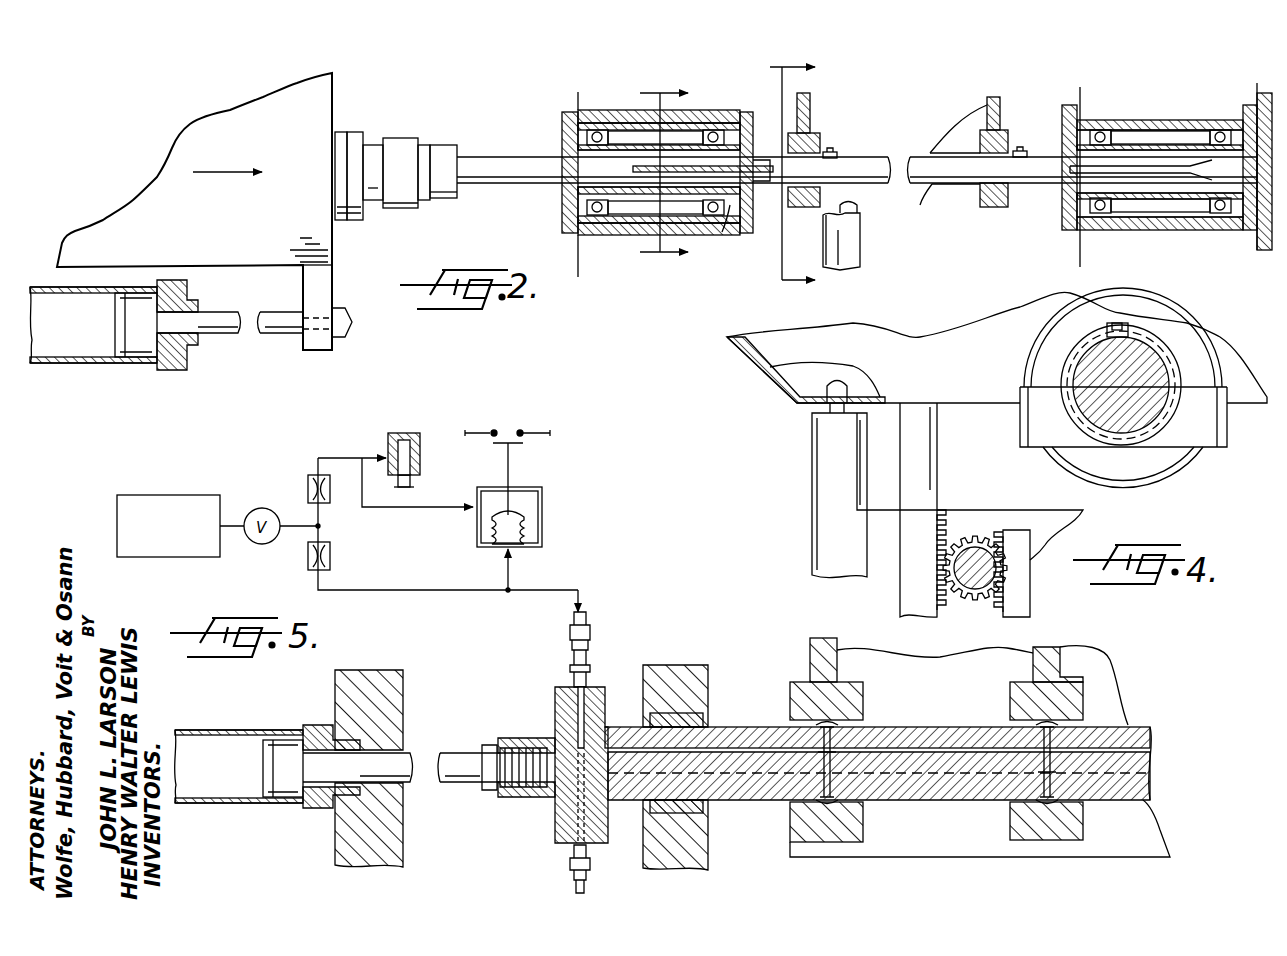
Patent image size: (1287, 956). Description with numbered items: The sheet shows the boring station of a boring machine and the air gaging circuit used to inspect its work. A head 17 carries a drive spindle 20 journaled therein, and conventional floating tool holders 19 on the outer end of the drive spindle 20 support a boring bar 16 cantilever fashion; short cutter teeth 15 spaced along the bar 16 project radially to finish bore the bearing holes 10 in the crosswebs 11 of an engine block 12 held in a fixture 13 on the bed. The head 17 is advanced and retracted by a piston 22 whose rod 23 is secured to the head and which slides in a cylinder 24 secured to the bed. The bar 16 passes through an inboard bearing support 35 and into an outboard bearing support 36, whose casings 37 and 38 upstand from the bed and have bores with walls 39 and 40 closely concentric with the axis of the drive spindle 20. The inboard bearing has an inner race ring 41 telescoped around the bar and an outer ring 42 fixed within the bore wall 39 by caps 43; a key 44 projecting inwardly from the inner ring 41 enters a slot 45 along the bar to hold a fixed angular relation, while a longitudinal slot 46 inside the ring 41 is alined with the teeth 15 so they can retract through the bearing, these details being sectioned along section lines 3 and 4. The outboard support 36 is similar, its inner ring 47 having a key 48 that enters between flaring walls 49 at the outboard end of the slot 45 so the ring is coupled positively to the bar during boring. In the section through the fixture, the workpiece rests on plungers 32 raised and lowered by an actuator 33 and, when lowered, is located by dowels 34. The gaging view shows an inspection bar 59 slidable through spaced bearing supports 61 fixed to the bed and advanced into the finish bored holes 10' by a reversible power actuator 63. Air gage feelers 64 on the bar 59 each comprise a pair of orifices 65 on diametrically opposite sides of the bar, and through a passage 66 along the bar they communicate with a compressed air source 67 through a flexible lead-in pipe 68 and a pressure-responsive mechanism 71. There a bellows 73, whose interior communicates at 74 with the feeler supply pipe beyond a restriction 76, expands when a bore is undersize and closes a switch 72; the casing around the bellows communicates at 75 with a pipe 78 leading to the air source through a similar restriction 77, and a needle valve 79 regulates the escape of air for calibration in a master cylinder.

In FIG. 2, the section line 3— 3 is at (656, 173).
In FIG. 2, the section line 4— 4 is at (782, 174).
In FIG. 2, the bearing holes 10 is at (898, 169).
In FIG. 4, the bearing holes 10 is at (1141, 369).
In FIG. 5, the finish bored holes 10' is at (988, 741).
In FIG. 2, the crosswebs 11 is at (808, 125).
In FIG. 4, the crosswebs 11 is at (1060, 465).
In FIG. 5, the crosswebs 11 is at (848, 857).
In FIG. 2, the engine block 12 is at (973, 97).
In FIG. 4, the engine block 12 is at (970, 337).
In FIG. 5, the engine block 12 is at (822, 637).
In FIG. 2, the fixture 13 is at (857, 236).
In FIG. 4, the fixture 13 is at (812, 480).
In FIG. 2, the teeth 15 is at (836, 152).
In FIG. 4, the teeth 15 is at (1118, 323).
In FIG. 2, the tool spindle or boring bar 16 is at (521, 158).
In FIG. 4, the tool spindle or boring bar 16 is at (1130, 393).
In FIG. 2, the head 17 is at (248, 224).
In FIG. 2, the floating tool holders 19 is at (418, 140).
In FIG. 2, the drive spindle 20 is at (340, 132).
In FIG. 2, the piston 22 is at (130, 357).
In FIG. 2, the rod 23 is at (268, 337).
In FIG. 2, the cylinder 24 is at (40, 364).
In FIG. 4, the plungers 32 is at (938, 432).
In FIG. 4, the actuator 33 is at (1034, 590).
In FIG. 2, the dowels 34 is at (856, 208).
In FIG. 4, the dowels 34 is at (850, 384).
In FIG. 2, the inboard bearing support 35 is at (594, 98).
In FIG. 2, the outboard bearing support 36 is at (1178, 98).
In FIG. 2, the casing 37 is at (578, 264).
In FIG. 2, the casing 38 is at (1080, 268).
In FIG. 2, the bore wall 39 is at (722, 212).
In FIG. 2, the bore wall 40 is at (1232, 215).
In FIG. 2, the inner race ring 41 is at (617, 225).
In FIG. 2, the outer ring 42 is at (720, 218).
In FIG. 2, the caps 43 is at (563, 222).
In FIG. 2, the key 44 is at (670, 165).
In FIG. 2, the slot 45 is at (775, 148).
In FIG. 2, the slot 46 is at (603, 150).
In FIG. 2, the inner ring 47 is at (1142, 128).
In FIG. 2, the key 48 is at (1085, 170).
In FIG. 2, the flaring walls 49 is at (1165, 138).
In FIG. 5, the inspection bar 59 is at (925, 725).
In FIG. 5, the bearing supports 61 is at (400, 676).
In FIG. 5, the reversible power actuator 63 is at (240, 805).
In FIG. 5, the air gage feelers 64 is at (822, 806).
In FIG. 5, the orifices 65 is at (804, 706).
In FIG. 5, the passage 66 is at (578, 722).
In FIG. 5, the source of compressed air 67 is at (187, 557).
In FIG. 5, the flexible lead-in pipe 68 is at (586, 630).
In FIG. 5, the pressure-responsive mechanism 71 is at (547, 490).
In FIG. 5, the switch 72 is at (512, 430).
In FIG. 5, the bellows 73 is at (540, 527).
In FIG. 5, the bellows interior connection 74 is at (512, 557).
In FIG. 5, the casing connection 75 is at (475, 508).
In FIG. 5, the restriction 76 is at (332, 556).
In FIG. 5, the restriction 77 is at (307, 486).
In FIG. 5, the pipe 78 is at (420, 507).
In FIG. 5, the needle valve 79 is at (400, 434).